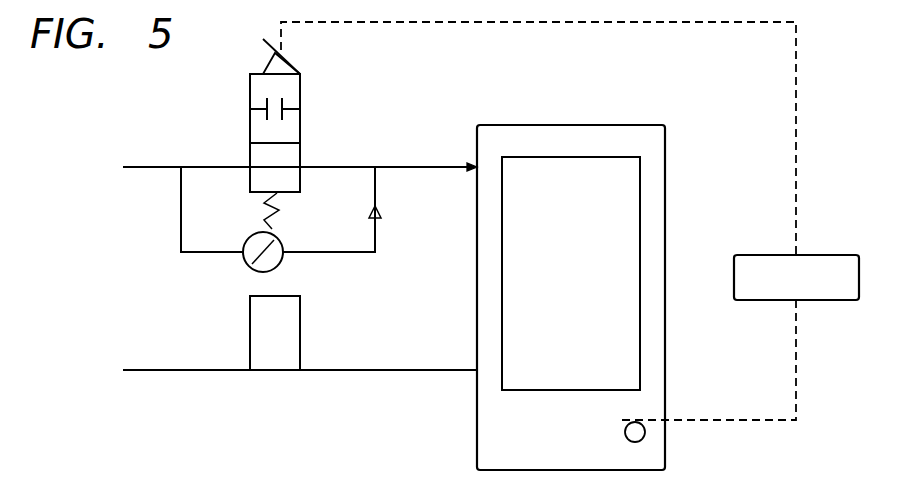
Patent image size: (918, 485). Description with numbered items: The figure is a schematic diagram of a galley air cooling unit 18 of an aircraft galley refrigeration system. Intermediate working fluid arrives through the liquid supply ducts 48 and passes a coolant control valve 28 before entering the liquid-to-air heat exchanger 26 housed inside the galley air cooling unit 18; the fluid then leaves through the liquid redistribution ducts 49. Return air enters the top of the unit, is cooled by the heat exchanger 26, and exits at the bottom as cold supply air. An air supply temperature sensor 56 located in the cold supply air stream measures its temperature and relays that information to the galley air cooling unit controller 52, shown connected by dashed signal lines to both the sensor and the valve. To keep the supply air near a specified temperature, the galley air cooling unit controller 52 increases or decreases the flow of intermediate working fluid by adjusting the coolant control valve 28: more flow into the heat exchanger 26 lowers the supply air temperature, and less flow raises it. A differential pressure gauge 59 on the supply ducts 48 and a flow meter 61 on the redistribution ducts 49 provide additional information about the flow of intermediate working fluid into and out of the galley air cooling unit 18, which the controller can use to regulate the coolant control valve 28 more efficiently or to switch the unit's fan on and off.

The galley air cooling unit 18 is at (665, 368).
The heat exchanger 26 is at (665, 237).
The coolant control valve 28 is at (300, 97).
The supply ducts 48 is at (152, 169).
The redistribution ducts 49 is at (395, 372).
The galley air cooling unit controller 52 is at (820, 254).
The air supply temperature sensor 56 is at (645, 438).
The differential pressure gauge 59 is at (283, 242).
The flow meter 61 is at (300, 333).